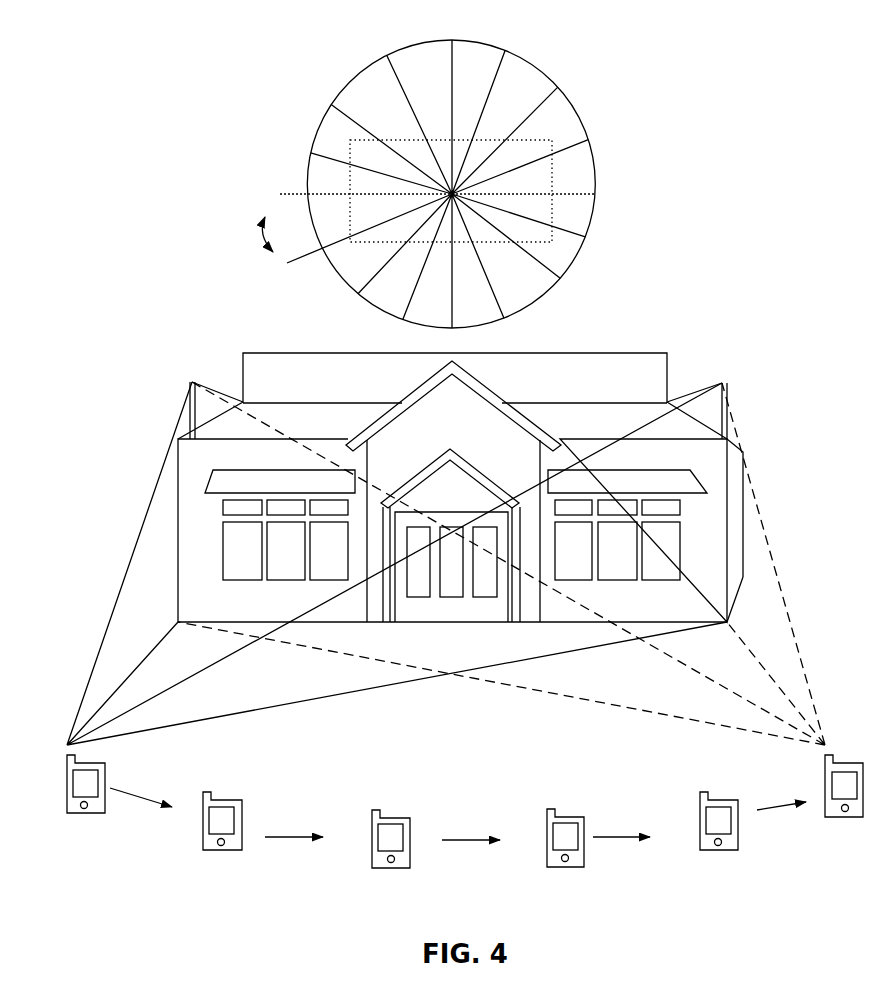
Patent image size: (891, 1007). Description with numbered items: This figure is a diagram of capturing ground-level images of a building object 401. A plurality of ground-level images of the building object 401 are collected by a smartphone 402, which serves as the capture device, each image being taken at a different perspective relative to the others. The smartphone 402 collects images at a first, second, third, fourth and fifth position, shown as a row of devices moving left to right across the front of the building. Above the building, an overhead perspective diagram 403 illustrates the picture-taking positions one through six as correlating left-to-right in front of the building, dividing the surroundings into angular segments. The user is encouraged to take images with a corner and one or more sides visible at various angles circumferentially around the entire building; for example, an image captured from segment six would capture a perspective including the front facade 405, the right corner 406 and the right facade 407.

The building object 401 is at (553, 194).
The smartphone 402 is at (93, 813).
The overhead perspective diagram 403 is at (562, 96).
The front facade 405 is at (452, 610).
The right corner 406 is at (725, 570).
The right facade 407 is at (738, 517).